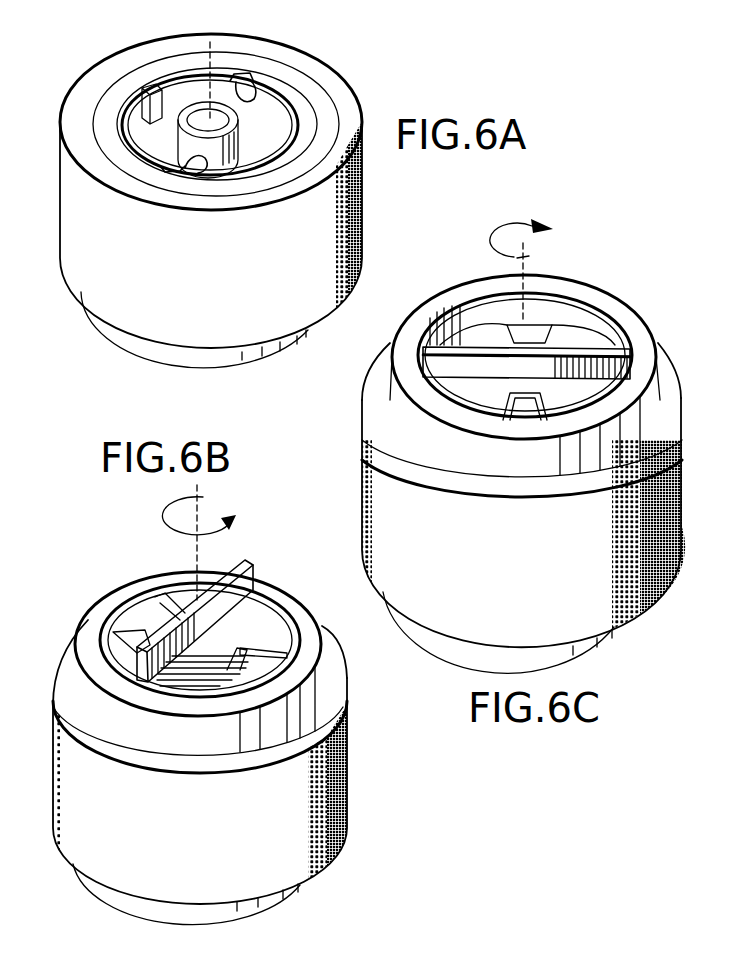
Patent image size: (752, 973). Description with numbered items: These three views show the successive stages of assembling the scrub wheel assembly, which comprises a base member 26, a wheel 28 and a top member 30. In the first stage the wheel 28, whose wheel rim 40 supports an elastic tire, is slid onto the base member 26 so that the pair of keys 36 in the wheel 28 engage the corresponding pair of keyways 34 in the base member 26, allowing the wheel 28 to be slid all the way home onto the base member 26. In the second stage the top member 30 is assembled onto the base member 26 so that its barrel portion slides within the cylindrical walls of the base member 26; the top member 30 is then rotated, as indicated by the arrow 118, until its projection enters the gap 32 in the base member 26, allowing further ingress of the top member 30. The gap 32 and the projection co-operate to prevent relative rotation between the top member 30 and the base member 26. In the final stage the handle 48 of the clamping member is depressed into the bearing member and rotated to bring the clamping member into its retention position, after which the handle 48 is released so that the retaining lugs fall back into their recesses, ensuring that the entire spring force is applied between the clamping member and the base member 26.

In FIG. 6A, the base member 26 is at (273, 348).
In FIG. 6B, the base member 26 is at (133, 902).
In FIG. 6C, the base member 26 is at (498, 632).
In FIG. 6A, the wheel 28 is at (306, 117).
In FIG. 6B, the top member 30 is at (277, 593).
In FIG. 6A, the gap 32 is at (150, 97).
In FIG. 6A, the keyways 34 is at (253, 100).
In FIG. 6A, the keys 36 is at (240, 77).
In FIG. 6C, the wheel rim 40 is at (630, 320).
In FIG. 6C, the handle 48 is at (577, 353).
In FIG. 6B, the arrow 118 is at (178, 530).